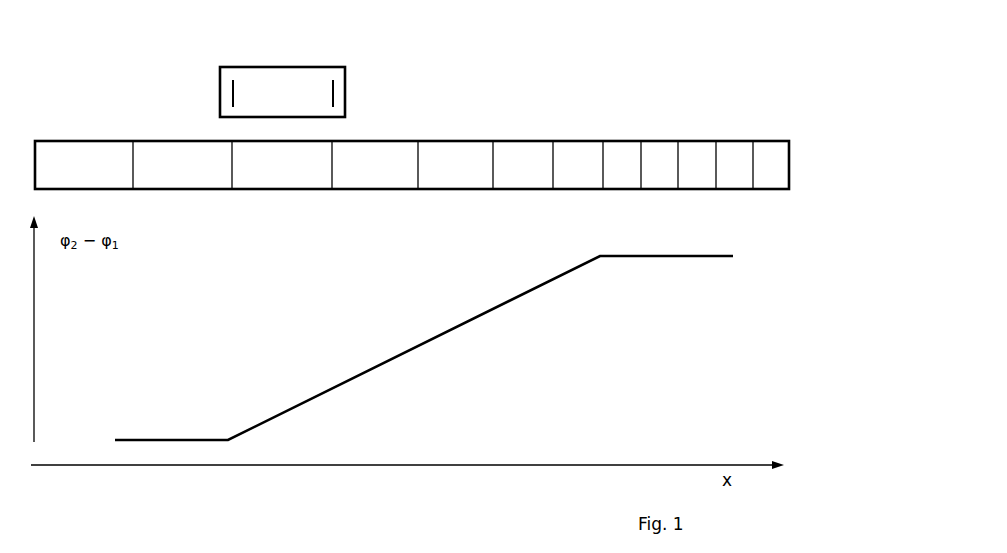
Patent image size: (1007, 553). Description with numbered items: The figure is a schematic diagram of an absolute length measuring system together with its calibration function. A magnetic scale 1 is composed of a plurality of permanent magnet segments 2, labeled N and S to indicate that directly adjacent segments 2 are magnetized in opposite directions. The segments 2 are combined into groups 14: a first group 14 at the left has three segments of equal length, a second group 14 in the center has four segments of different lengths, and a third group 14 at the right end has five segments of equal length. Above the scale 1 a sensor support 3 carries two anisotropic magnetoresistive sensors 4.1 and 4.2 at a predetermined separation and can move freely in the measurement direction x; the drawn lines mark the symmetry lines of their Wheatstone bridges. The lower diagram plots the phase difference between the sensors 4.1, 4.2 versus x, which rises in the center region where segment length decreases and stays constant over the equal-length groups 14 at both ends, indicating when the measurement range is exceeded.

The magnetic scale 1 is at (630, 152).
The permanent magnet segments 2 is at (578, 178).
The sensor support 3 is at (282, 90).
The first sensor 4.1 is at (230, 88).
The second sensor 4.2 is at (345, 78).
The groups of segments 14 is at (258, 155).